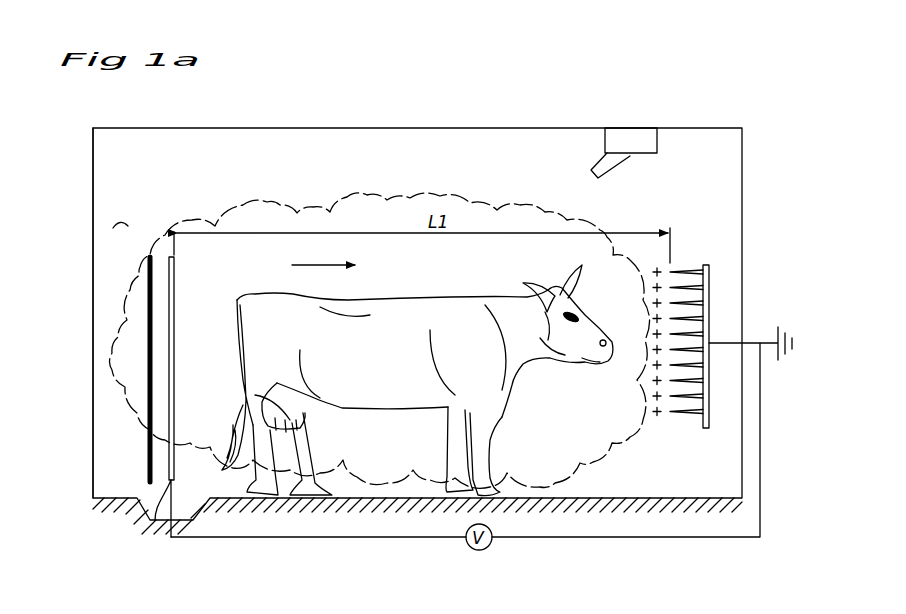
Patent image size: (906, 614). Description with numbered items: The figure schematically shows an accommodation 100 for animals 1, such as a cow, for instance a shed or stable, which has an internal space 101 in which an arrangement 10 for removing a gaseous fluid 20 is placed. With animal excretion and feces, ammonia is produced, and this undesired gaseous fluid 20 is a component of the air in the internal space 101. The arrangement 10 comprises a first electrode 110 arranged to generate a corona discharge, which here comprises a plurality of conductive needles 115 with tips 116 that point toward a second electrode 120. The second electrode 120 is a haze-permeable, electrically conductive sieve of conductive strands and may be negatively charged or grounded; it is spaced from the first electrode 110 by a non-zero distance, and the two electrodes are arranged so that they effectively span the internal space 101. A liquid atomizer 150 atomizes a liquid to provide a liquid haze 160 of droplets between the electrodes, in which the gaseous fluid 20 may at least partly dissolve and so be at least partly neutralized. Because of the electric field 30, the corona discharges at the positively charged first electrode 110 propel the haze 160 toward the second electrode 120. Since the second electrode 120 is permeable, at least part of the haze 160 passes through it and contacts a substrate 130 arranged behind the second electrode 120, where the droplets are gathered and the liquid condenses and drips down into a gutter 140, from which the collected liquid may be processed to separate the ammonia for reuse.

The accommodation 100 is at (707, 101).
The internal space 101 is at (127, 226).
The animal 1 is at (529, 427).
The arrangement 10 is at (231, 187).
The gaseous fluid 20 is at (270, 183).
The electric field 30 is at (327, 265).
The liquid haze 160 is at (398, 262).
The liquid atomizer 150 is at (626, 139).
The substrate 130 is at (150, 448).
The second electrode 120 is at (152, 530).
The gutter 140 is at (210, 521).
The first electrode 110 is at (709, 272).
The needles 115 is at (680, 272).
The tips 116 is at (672, 272).